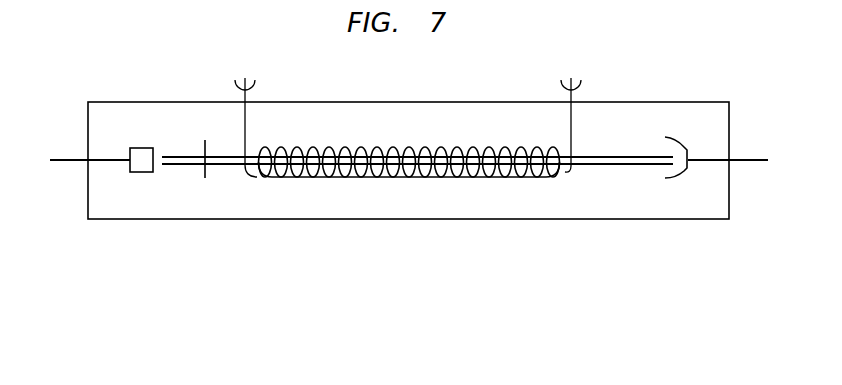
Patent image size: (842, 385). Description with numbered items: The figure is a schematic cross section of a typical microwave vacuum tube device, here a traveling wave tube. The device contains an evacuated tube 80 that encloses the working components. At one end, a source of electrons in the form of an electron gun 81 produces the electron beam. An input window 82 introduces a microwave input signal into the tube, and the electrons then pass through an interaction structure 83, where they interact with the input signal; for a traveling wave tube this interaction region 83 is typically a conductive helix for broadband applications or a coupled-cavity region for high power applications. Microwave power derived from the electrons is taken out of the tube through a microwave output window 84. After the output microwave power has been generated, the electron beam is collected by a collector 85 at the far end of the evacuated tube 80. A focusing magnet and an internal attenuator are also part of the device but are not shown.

The evacuated tube 80 is at (385, 102).
The electron gun 81 is at (150, 172).
The input window 82 is at (254, 86).
The interaction structure 83 is at (563, 234).
The microwave output window 84 is at (580, 86).
The collector 85 is at (665, 178).